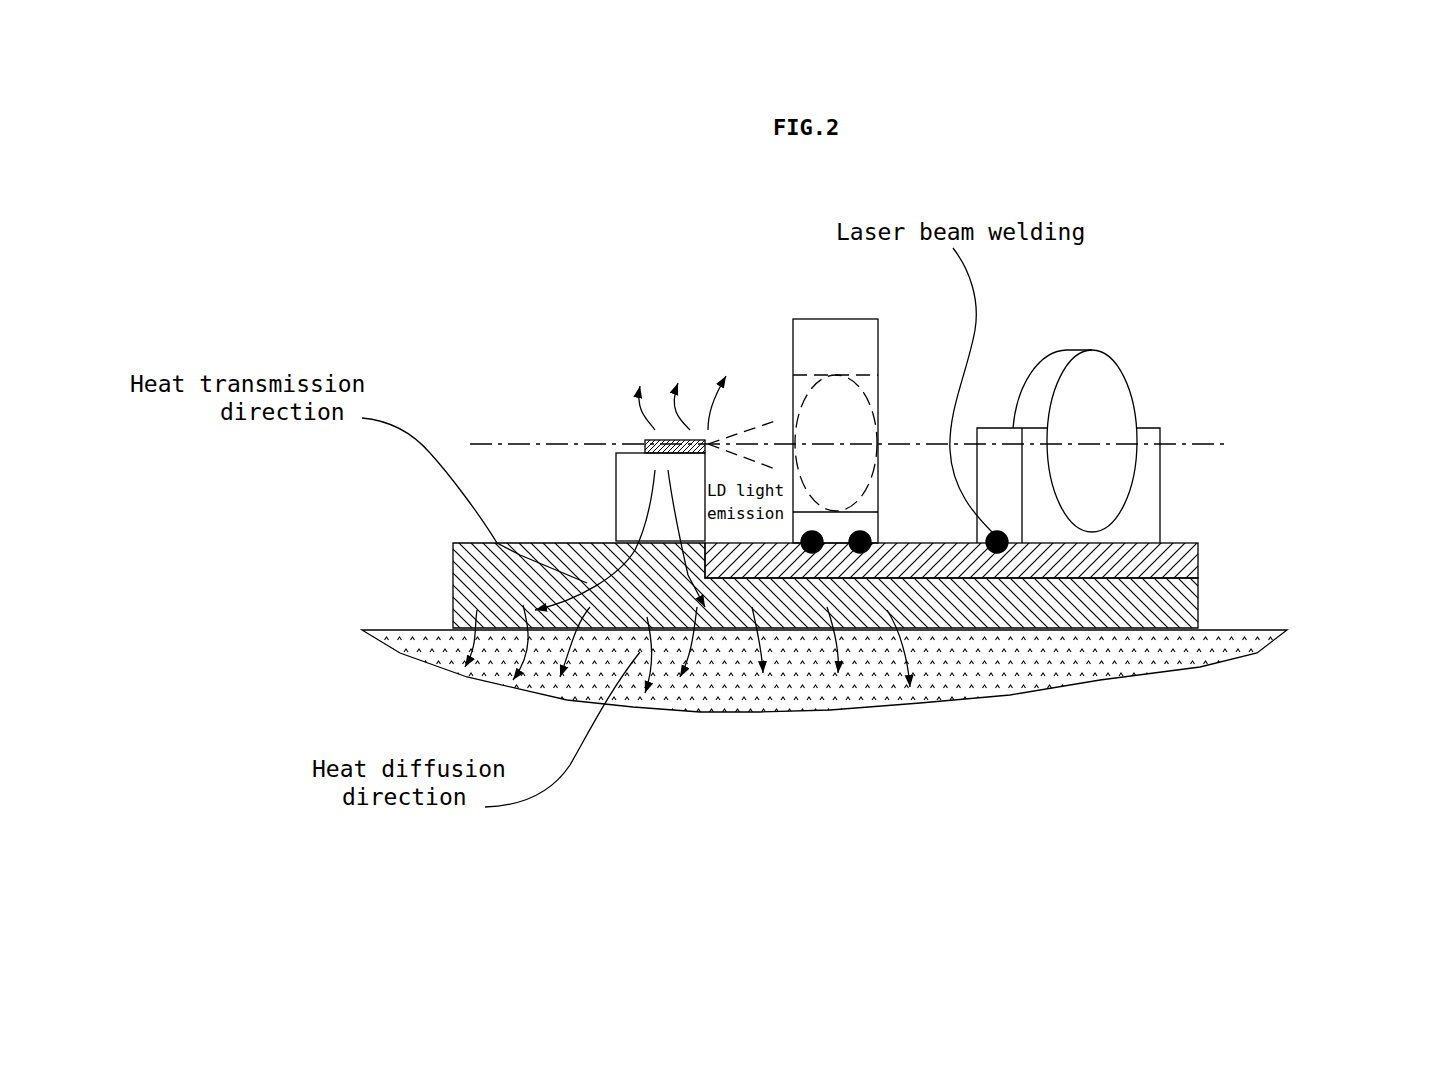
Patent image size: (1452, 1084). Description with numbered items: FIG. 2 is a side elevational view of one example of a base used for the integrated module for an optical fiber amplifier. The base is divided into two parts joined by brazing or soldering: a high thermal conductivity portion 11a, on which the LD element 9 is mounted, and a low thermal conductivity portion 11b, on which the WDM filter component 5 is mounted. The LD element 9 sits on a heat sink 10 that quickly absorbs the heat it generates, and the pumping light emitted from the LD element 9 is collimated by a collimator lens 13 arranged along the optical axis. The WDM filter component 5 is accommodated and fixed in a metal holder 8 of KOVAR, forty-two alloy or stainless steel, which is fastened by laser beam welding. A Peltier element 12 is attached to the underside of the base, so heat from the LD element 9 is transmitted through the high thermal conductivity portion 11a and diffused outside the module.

The WDM filter component 5 is at (1117, 397).
The metal holder 8 is at (1143, 512).
The LD element 9 is at (645, 440).
The heat sink block 10 is at (613, 483).
The high thermal conductivity portion 11a is at (452, 560).
The low thermal conductivity portion 11b is at (1190, 560).
The Peltier element 12 is at (963, 667).
The collimator lens 13 is at (815, 405).